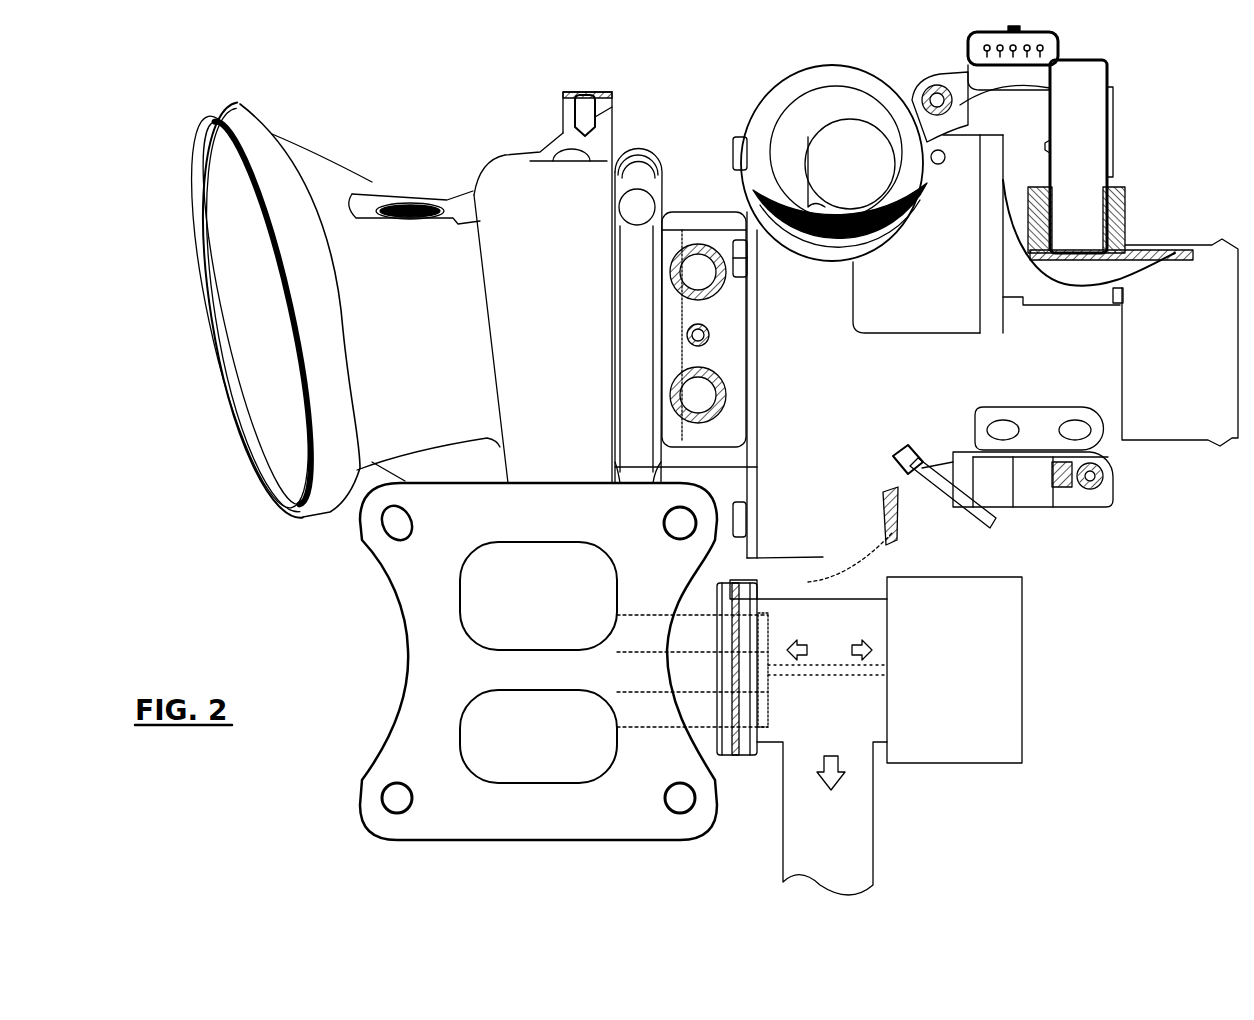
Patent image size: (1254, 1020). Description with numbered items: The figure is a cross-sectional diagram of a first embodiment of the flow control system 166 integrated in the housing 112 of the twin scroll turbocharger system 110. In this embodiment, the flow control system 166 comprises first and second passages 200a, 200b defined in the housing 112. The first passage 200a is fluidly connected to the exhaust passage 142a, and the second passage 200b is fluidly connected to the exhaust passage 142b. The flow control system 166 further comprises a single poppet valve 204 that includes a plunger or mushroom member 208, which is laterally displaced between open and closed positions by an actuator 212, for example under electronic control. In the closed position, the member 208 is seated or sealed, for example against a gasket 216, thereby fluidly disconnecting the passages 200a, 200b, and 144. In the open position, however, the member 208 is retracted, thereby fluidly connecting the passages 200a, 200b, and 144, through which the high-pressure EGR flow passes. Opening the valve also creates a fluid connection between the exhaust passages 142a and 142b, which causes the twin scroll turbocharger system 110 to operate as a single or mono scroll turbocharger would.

The twin scroll turbocharger system 110 is at (197, 46).
The housing 112 is at (405, 660).
The exhaust passage 142a is at (483, 780).
The exhaust passage 142b is at (483, 545).
The first passage 200a is at (637, 727).
The second passage 200b is at (638, 612).
The plunger or mushroom member 208 is at (768, 637).
The actuator 212 is at (1025, 673).
The gasket 216 is at (737, 762).
The single poppet valve 204 is at (931, 784).
The passage 144 is at (783, 845).
The flow control system 166 is at (931, 872).